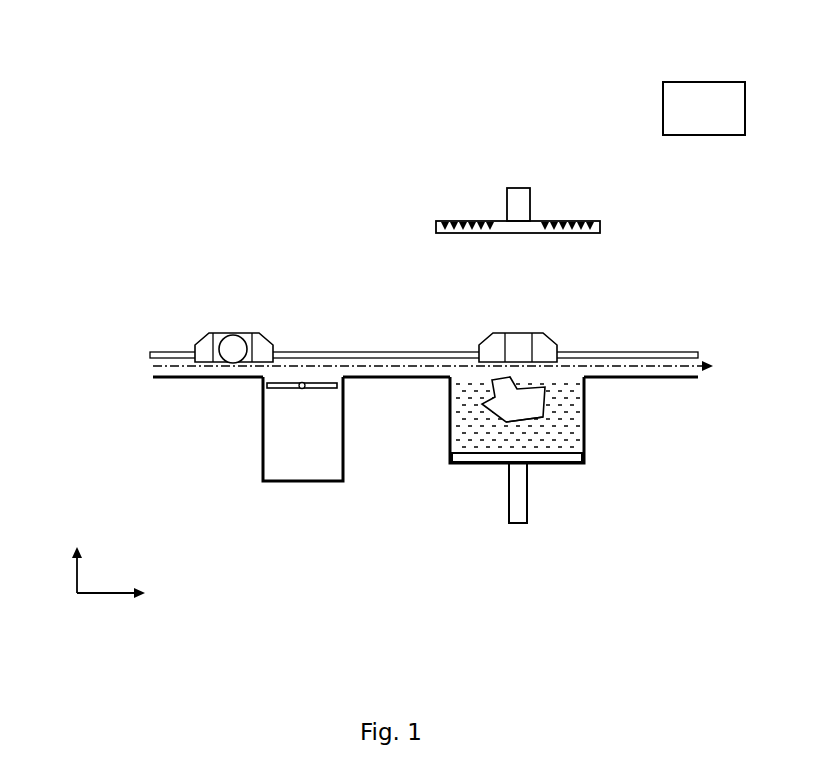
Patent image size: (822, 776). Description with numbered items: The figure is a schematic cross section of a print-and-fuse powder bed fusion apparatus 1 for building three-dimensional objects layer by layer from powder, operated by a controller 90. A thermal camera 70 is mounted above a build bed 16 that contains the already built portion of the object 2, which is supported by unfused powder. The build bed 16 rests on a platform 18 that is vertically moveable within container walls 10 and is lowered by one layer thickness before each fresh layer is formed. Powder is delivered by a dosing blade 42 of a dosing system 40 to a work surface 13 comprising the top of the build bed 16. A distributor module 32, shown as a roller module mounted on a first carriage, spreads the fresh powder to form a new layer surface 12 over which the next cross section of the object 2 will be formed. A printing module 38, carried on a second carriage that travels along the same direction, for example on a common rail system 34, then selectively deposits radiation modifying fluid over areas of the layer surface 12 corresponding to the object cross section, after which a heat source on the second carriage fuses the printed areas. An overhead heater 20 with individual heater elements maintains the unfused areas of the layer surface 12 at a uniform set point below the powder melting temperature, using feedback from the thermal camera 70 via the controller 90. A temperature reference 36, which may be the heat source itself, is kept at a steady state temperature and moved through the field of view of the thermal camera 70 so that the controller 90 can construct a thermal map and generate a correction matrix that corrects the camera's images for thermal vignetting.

The apparatus 1 is at (212, 72).
The object 2 is at (545, 417).
The container walls 10 is at (582, 440).
The layer surface 12 is at (570, 377).
The work surface 13 is at (368, 376).
The build bed 16 is at (562, 397).
The platform 18 is at (553, 463).
The overhead heater 20 is at (473, 220).
The distributor module 32 is at (237, 333).
The common rail system 34 is at (153, 352).
The temperature reference 36 is at (482, 343).
The printing module 38 is at (527, 333).
The dosing system 40 is at (263, 450).
The dosing blade 42 is at (290, 388).
The thermal camera 70 is at (515, 188).
The controller 90 is at (720, 122).